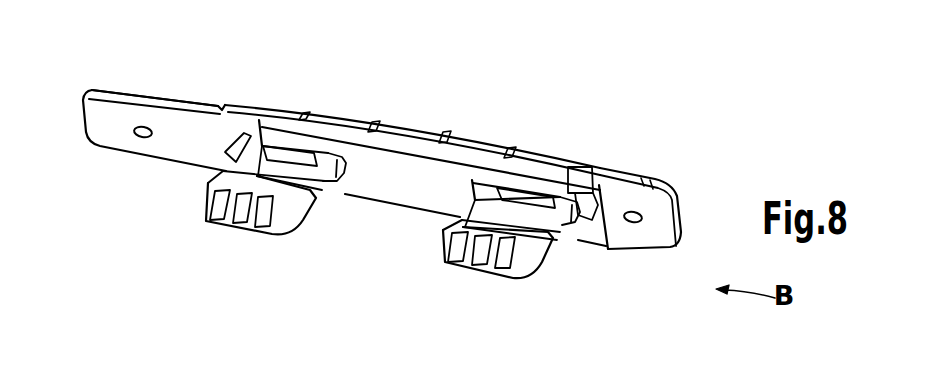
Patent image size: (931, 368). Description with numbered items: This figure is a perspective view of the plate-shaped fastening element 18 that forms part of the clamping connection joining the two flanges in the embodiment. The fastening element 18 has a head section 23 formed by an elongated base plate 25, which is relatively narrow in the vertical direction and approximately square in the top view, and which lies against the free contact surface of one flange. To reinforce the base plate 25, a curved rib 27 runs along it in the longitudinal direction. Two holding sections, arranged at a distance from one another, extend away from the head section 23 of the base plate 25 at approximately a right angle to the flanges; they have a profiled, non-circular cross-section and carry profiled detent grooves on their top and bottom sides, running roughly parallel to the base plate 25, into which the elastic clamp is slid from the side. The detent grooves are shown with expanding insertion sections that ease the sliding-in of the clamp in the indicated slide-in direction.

The plate-shaped fastening element 18 is at (675, 185).
The head section 23 is at (152, 100).
The base plate 25 is at (107, 132).
The curved rib 27 is at (408, 123).